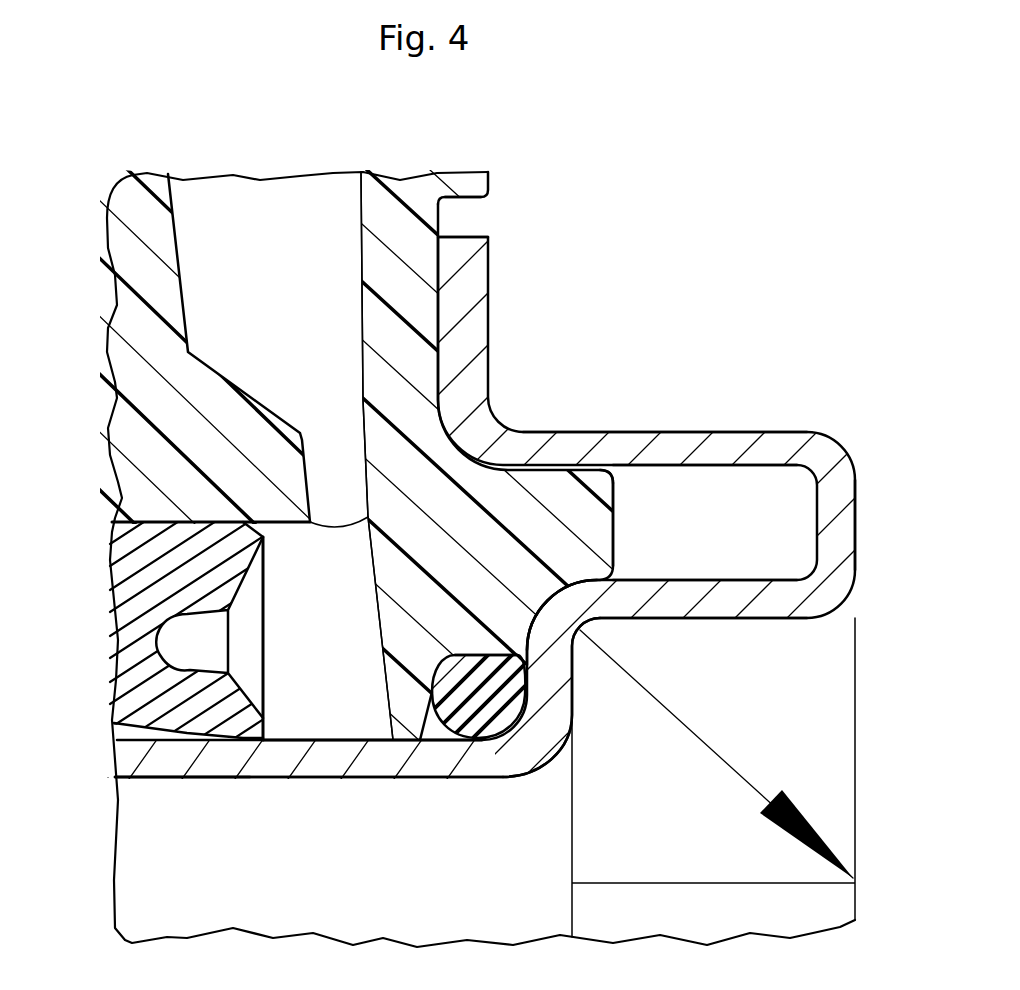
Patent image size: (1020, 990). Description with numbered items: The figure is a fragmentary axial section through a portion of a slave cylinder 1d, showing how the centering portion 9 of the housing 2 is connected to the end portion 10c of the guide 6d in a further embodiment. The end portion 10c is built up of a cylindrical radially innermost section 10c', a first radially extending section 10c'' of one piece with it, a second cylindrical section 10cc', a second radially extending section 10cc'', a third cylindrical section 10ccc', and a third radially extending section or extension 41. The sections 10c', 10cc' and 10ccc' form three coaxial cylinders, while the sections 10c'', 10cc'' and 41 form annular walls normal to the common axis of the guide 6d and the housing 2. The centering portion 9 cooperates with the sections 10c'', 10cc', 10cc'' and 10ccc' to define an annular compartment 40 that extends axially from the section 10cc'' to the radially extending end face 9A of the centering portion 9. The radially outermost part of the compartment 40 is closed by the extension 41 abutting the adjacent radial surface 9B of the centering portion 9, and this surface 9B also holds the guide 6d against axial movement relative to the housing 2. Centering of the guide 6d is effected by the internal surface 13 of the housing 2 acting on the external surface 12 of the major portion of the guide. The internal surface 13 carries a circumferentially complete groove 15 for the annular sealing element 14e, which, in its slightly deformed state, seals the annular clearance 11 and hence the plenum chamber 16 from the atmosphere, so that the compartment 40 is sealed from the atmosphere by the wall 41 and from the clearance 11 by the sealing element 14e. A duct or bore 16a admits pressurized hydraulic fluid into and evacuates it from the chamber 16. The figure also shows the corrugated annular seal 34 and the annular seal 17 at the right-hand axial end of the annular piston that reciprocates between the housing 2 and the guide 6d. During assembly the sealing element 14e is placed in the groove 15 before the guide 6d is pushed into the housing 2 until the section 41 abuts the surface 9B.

The duct 16a is at (228, 170).
The housing 2 is at (497, 180).
The radially extending surface 9B is at (445, 218).
The slave cylinder 1d is at (510, 227).
The radially extending extension 41 is at (468, 332).
The third cylindrical section 10ccc' is at (665, 415).
The second radially extending section 10cc'' is at (888, 525).
The radially extending end face 9A is at (615, 492).
The annular compartment 40 is at (733, 526).
The centering portion 9 is at (598, 546).
The second cylindrical section 10cc' is at (703, 637).
The end portion 10c is at (604, 697).
The corrugated annular seal 34 is at (800, 692).
The first radially extending section 10c'' is at (595, 685).
The cylindrical radially innermost section 10c' is at (309, 832).
The guide 6d is at (148, 763).
The annular clearance 11 is at (400, 742).
The internal surface 13 is at (400, 742).
The annular sealing element 14e is at (493, 722).
The groove 15 is at (467, 653).
The plenum chamber 16 is at (325, 664).
The annular seal 17 is at (143, 613).
The external surface 12 is at (177, 740).